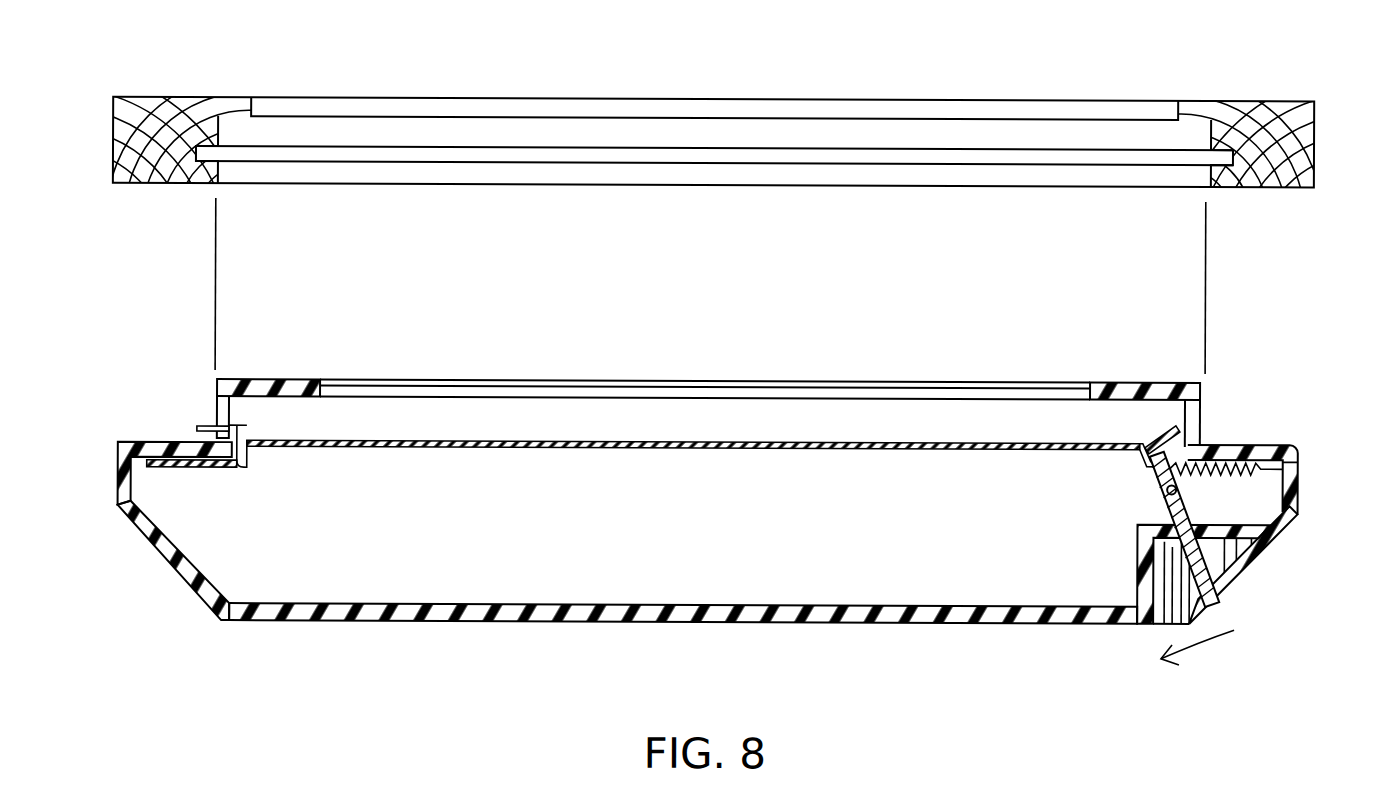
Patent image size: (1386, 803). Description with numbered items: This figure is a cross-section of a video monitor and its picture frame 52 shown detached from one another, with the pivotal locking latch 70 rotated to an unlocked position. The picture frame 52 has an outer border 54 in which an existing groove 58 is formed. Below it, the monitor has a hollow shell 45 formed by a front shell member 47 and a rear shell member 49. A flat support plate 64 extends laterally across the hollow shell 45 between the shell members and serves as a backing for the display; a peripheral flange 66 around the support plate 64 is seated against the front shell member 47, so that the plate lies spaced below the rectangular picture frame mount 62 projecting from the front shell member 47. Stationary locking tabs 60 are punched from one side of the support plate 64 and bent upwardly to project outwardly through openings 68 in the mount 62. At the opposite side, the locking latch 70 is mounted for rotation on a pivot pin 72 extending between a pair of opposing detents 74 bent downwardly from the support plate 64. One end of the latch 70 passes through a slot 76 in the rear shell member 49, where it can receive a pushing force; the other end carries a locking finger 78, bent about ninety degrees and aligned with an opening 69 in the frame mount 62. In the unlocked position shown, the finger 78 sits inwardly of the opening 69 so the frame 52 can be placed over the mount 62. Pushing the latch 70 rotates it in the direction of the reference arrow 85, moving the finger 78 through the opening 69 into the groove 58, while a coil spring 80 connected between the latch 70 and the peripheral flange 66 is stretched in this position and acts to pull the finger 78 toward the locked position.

The hollow shell 45 is at (852, 635).
The front shell member 47 is at (153, 443).
The rear shell member 49 is at (207, 603).
The picture frame 52 is at (784, 92).
The border 54 is at (615, 97).
The groove 58 is at (895, 160).
The stationary locking tabs 60 is at (208, 426).
The picture frame mount 62 is at (250, 380).
The support plate 64 is at (683, 442).
The peripheral flange 66 is at (162, 468).
The openings 68 is at (229, 422).
The opening 69 is at (1197, 430).
The pivotal locking latch 70 is at (1188, 515).
The pivot pin 72 is at (1162, 500).
The detents 74 is at (1162, 489).
The slot 76 is at (1230, 575).
The locking finger 78 is at (1160, 436).
The coil spring 80 is at (1228, 445).
The reference arrow 85 is at (1197, 648).